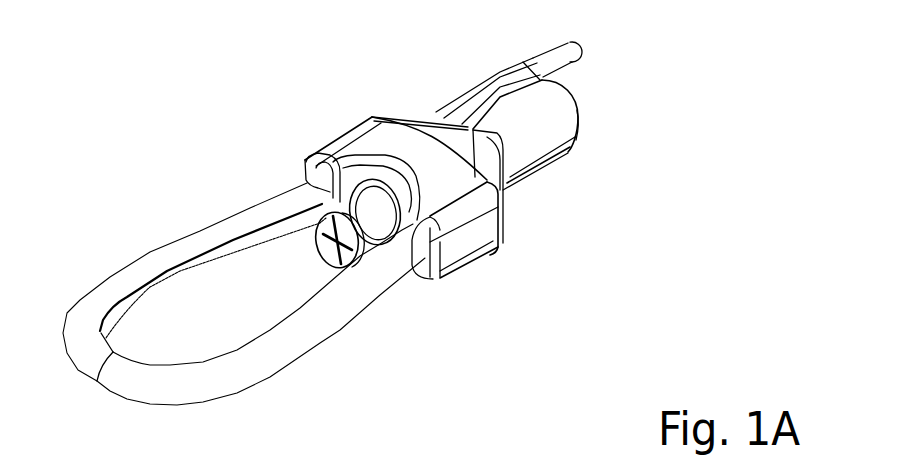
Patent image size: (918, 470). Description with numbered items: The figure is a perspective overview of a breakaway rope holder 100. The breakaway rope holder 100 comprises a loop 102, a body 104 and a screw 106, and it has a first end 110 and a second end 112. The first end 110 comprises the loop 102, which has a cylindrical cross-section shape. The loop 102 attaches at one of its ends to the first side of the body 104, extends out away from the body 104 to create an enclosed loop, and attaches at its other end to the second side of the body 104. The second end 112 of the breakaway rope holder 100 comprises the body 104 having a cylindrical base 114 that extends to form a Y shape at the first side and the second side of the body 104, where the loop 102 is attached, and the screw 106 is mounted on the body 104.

The breakaway rope holder 100 is at (396, 78).
The loop 102 is at (208, 232).
The body 104 is at (355, 135).
The screw 106 is at (360, 250).
The first end 110 is at (111, 367).
The second end 112 is at (572, 104).
The cylindrical base 114 is at (592, 132).